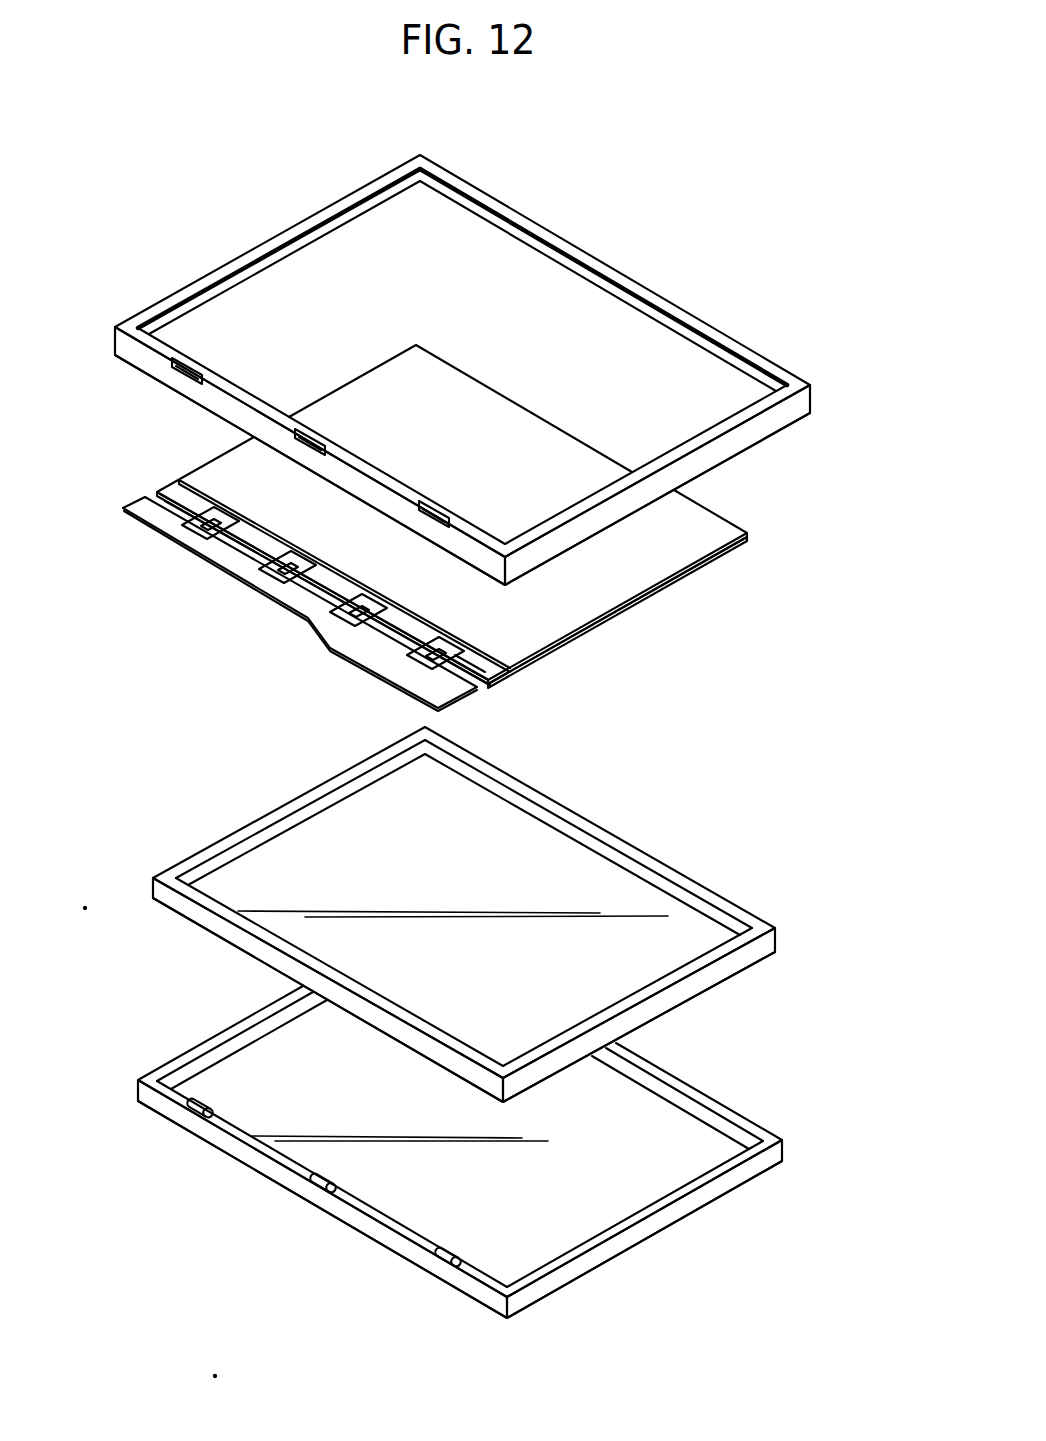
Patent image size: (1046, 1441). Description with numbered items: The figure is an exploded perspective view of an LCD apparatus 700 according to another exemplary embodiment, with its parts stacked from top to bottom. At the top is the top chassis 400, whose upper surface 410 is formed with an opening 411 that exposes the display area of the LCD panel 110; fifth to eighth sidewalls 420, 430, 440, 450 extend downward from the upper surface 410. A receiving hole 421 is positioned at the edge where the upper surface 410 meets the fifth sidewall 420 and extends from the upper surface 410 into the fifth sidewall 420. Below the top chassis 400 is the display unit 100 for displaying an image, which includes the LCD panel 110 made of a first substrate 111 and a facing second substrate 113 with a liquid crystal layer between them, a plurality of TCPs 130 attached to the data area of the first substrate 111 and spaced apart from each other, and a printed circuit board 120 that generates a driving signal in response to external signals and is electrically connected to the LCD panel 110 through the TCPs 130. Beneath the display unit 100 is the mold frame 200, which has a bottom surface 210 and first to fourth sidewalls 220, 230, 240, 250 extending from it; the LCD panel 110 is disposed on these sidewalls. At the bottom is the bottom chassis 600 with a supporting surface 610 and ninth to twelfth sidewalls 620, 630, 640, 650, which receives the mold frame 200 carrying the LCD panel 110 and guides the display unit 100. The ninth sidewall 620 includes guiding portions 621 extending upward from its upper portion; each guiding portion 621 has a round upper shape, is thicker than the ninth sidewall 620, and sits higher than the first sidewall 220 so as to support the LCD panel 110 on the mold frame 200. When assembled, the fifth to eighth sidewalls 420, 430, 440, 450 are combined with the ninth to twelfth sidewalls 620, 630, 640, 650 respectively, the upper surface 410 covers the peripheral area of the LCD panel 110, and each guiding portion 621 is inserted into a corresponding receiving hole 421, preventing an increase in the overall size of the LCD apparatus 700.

The LCD apparatus 700 is at (710, 98).
The top chassis 400 is at (752, 333).
The upper surface 410 is at (155, 343).
The opening 411 is at (447, 257).
The fifth sidewall 420 is at (152, 367).
The receiving hole 421 is at (177, 370).
The sixth sidewall 430 is at (590, 276).
The seventh sidewall 440 is at (750, 438).
The eighth sidewall 450 is at (286, 258).
The display unit 100 is at (688, 602).
The LCD panel 110 is at (838, 517).
The first substrate 111 is at (724, 555).
The second substrate 113 is at (742, 527).
The printed circuit board 120 is at (448, 688).
The TCP (tape carrier package) 130 is at (497, 676).
The mold frame 200 is at (764, 974).
The bottom surface 210 is at (703, 925).
The first sidewall 220 is at (177, 902).
The second sidewall 230 is at (630, 878).
The third sidewall 240 is at (560, 1060).
The fourth sidewall 250 is at (222, 863).
The bottom chassis 600 is at (674, 1240).
The supporting surface 610 is at (675, 1123).
The ninth sidewall 620 is at (255, 1160).
The guiding portion 621 is at (198, 1112).
The tenth sidewall 630 is at (740, 1132).
The eleventh sidewall 640 is at (600, 1257).
The twelfth sidewall 650 is at (230, 1057).